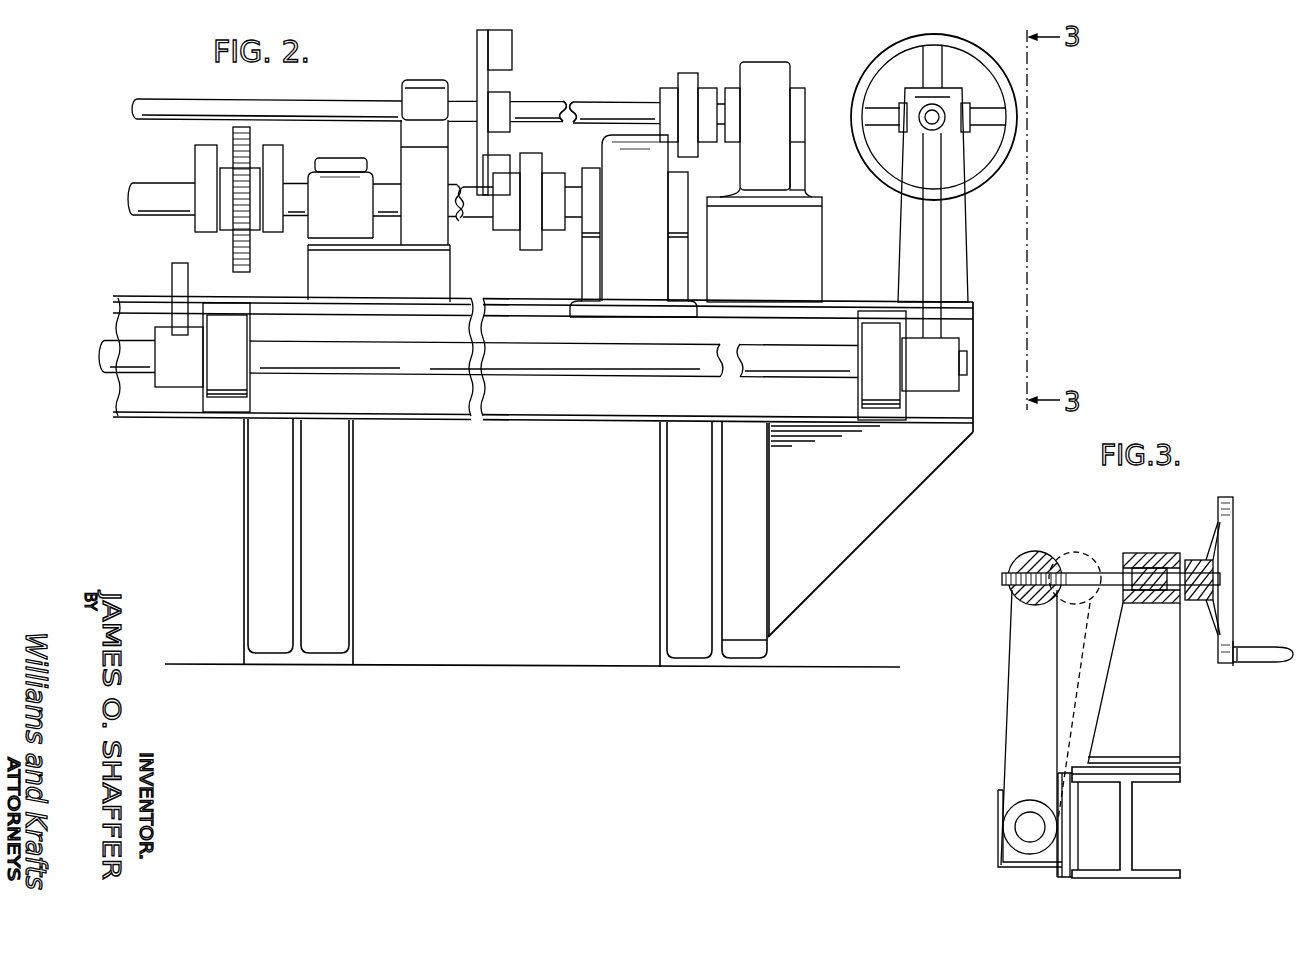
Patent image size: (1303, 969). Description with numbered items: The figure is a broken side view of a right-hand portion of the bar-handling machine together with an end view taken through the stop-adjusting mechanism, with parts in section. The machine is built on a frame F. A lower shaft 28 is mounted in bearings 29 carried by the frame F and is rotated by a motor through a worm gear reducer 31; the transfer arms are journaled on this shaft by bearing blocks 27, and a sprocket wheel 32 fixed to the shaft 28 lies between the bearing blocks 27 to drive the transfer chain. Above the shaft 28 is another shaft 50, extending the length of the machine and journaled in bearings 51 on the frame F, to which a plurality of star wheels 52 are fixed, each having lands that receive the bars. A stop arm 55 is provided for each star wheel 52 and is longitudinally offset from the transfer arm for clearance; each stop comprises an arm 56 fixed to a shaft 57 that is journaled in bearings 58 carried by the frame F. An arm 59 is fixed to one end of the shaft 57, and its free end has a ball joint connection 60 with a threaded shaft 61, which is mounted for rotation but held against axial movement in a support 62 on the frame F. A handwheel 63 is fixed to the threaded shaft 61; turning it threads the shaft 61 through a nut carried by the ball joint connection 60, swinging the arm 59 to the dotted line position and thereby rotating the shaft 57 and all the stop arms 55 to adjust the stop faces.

In FIG. 2, the bearing blocks 27 is at (200, 157).
In FIG. 2, the shaft 28 is at (126, 211).
In FIG. 2, the bearings 29 is at (348, 220).
In FIG. 2, the worm gear reducer 31 is at (620, 263).
In FIG. 2, the sprocket wheel 32 is at (247, 265).
In FIG. 2, the shaft 50 is at (356, 108).
In FIG. 2, the bearings 51 is at (424, 95).
In FIG. 2, the star wheel 52 is at (515, 48).
In FIG. 2, the stop arm 55 is at (181, 263).
In FIG. 2, the arm 56 is at (175, 280).
In FIG. 2, the shaft 57 is at (582, 365).
In FIG. 3, the shaft 57 is at (1023, 830).
In FIG. 2, the bearings 58 is at (228, 382).
In FIG. 2, the arm 59 is at (938, 245).
In FIG. 3, the arm 59 is at (1015, 727).
In FIG. 3, the ball joint connection 60 is at (1034, 551).
In FIG. 3, the threaded shaft 61 is at (1106, 569).
In FIG. 3, the support 62 is at (1153, 553).
In FIG. 2, the handwheel 63 is at (977, 60).
In FIG. 3, the handwheel 63 is at (1227, 530).
In FIG. 2, the frame F is at (119, 296).
In FIG. 3, the frame F is at (1180, 774).